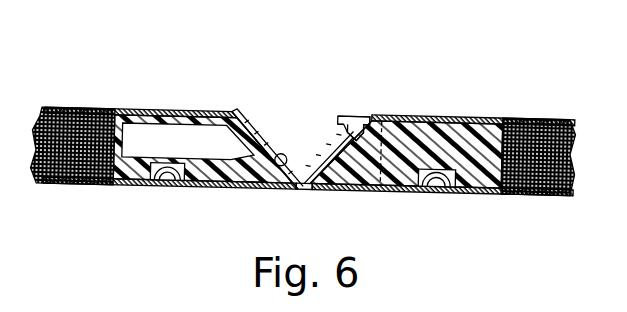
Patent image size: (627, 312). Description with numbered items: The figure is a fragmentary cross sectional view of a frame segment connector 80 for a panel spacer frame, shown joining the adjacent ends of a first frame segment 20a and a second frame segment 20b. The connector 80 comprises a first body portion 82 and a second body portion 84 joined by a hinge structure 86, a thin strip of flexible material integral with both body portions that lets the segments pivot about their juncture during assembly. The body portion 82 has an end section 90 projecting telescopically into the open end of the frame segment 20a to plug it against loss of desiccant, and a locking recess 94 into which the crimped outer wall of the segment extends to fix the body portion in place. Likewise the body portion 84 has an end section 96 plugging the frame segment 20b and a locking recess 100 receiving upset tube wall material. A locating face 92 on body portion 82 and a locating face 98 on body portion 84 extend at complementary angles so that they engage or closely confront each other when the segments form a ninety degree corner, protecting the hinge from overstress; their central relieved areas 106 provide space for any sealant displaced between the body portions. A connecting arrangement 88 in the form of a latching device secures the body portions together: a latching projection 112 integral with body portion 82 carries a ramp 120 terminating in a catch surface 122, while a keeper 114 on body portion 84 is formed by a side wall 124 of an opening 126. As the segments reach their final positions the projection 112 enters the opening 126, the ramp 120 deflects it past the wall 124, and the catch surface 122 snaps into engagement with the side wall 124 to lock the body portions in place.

The first frame segment 20a is at (64, 107).
The second frame segment 20b is at (548, 120).
The frame segment connector 80 is at (376, 196).
The first body portion 82 is at (204, 185).
The second body portion 84 is at (456, 128).
The hinge structure 86 is at (308, 190).
The connecting arrangement 88 is at (316, 82).
The end section 90 is at (118, 186).
The locating face 92 is at (236, 109).
The locking recess 94 is at (156, 184).
The end section 96 is at (495, 131).
The locating face 98 is at (337, 162).
The locking recess 100 is at (472, 180).
The central relieved areas 106 is at (374, 118).
The latching projection 112 is at (338, 117).
The keeper 114 is at (231, 146).
The ramp 120 is at (350, 117).
The catch surface 122 is at (362, 120).
The side wall 124 is at (255, 122).
The opening 126 is at (284, 153).